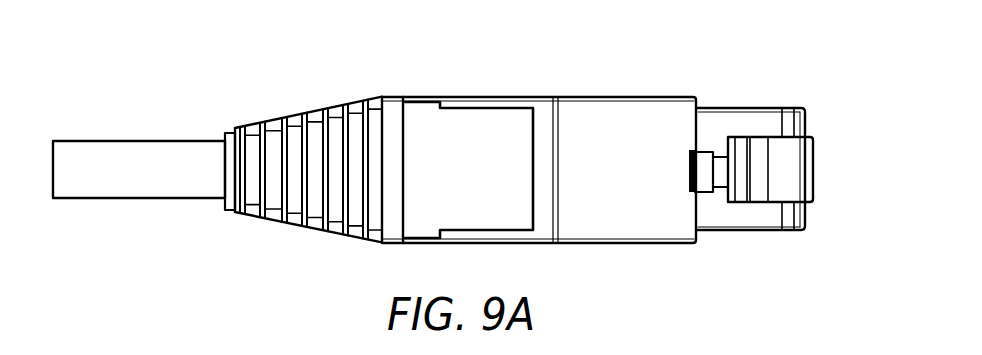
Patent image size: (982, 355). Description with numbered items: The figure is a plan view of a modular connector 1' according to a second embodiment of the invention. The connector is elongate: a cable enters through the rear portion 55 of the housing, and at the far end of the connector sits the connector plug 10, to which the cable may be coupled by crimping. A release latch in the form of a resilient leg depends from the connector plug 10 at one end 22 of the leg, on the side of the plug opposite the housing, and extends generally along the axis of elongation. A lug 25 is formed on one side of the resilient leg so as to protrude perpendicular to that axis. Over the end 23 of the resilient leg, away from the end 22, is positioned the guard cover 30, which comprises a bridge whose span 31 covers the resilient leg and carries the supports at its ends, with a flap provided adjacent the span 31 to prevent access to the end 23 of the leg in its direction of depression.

The modular connector 1' is at (617, 121).
The rear portion 55 is at (290, 98).
The guard cover 30 is at (648, 86).
The span 31 is at (607, 137).
The connector plug 10 is at (813, 222).
The end of the resilient leg 23 is at (715, 157).
The lug 25 is at (753, 158).
The end of the leg 22 is at (787, 158).